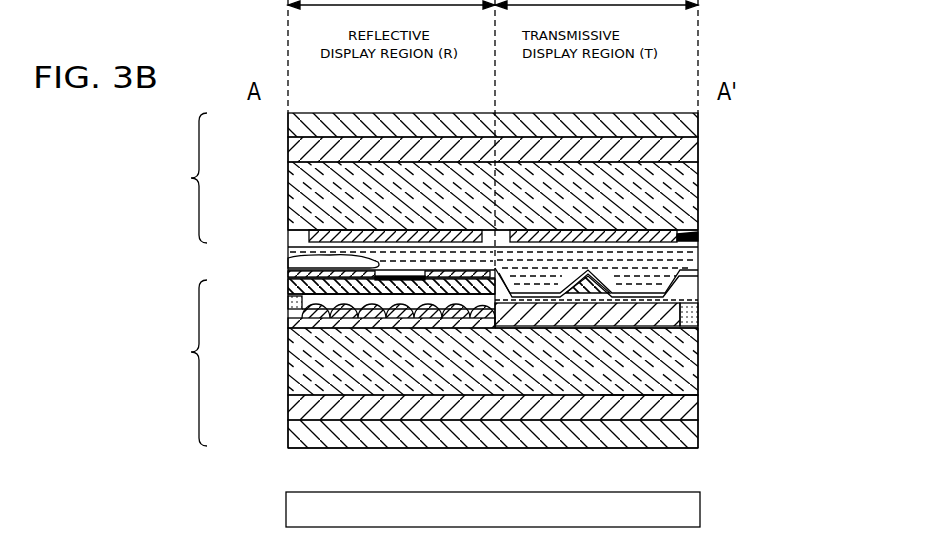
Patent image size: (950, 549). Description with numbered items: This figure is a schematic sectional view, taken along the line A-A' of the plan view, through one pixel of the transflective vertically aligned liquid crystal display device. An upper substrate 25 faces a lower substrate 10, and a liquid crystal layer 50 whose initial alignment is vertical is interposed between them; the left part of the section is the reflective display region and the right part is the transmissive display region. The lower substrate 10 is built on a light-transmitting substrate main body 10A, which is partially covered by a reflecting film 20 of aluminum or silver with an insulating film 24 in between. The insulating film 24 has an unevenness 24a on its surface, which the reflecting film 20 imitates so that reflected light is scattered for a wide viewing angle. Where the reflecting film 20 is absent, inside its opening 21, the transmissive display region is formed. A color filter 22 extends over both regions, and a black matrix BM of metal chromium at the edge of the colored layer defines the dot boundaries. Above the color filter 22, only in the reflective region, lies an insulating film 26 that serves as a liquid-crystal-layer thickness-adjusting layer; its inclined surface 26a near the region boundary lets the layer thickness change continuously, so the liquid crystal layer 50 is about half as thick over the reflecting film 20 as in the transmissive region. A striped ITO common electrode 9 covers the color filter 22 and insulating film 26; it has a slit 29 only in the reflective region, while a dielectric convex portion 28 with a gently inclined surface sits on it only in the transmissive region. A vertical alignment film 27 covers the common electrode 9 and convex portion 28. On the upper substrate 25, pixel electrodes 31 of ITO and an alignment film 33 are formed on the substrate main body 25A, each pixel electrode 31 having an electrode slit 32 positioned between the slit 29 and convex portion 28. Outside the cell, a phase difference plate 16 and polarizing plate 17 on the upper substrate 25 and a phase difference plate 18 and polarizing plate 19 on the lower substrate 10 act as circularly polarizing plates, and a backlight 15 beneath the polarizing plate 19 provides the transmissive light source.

The polarizing plate 17 is at (700, 118).
The phase difference plate 16 is at (700, 143).
The substrate main body 25A is at (700, 188).
The alignment film 33 is at (700, 232).
The pixel electrode 31 is at (703, 236).
The liquid crystal layer 50 is at (703, 246).
The electrode slit 32 is at (500, 242).
The slit 29 is at (320, 258).
The alignment film 27 is at (705, 270).
The common electrode 9 is at (700, 278).
The projection of insulating film 26a is at (700, 292).
The insulating film 26 is at (700, 312).
The black matrix BM is at (703, 322).
The opening 21 is at (496, 330).
The reflecting film 20 is at (292, 325).
The unevenness 24a is at (310, 330).
The insulating film 24 is at (372, 330).
The color filter 22 is at (700, 366).
The convex portion 28 is at (640, 330).
The substrate main body 10A is at (700, 405).
The phase difference plate 18 is at (700, 422).
The polarizing plate 19 is at (690, 448).
The backlight 15 is at (688, 508).
The upper substrate 25 is at (178, 178).
The lower substrate 10 is at (180, 363).